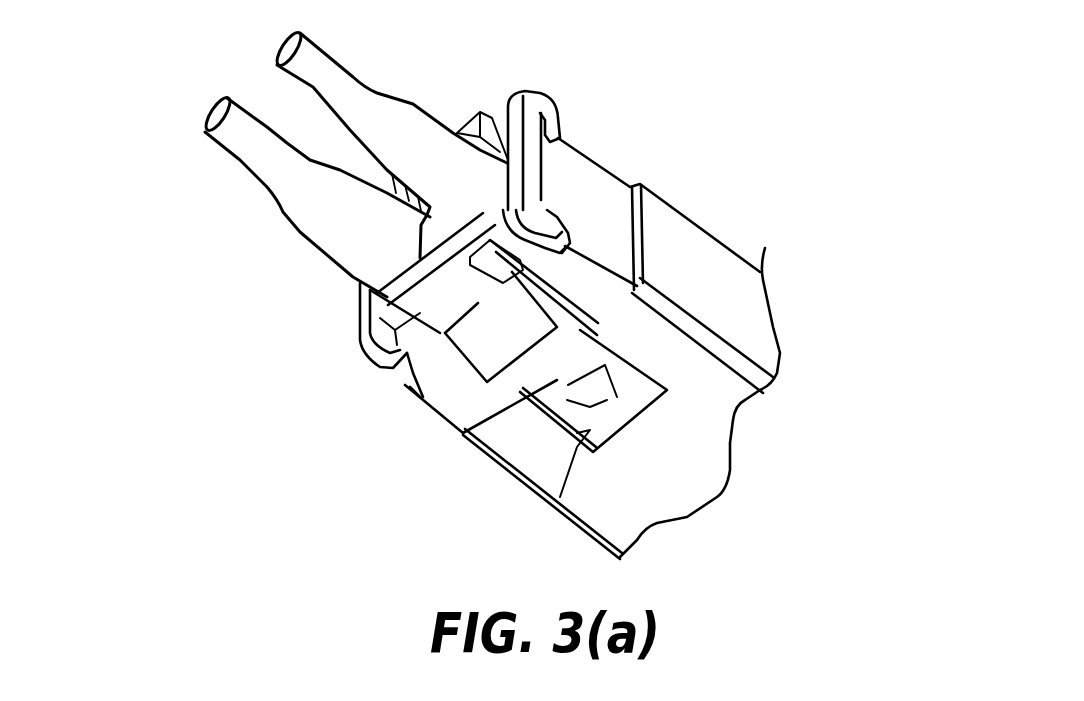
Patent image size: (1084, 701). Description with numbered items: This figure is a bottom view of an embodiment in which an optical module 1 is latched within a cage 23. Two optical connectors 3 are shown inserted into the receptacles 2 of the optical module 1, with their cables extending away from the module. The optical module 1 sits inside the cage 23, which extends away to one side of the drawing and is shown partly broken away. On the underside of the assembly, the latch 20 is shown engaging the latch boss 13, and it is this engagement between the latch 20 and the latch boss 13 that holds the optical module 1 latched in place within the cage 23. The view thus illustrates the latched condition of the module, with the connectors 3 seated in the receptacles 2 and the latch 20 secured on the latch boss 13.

The optical module 1 is at (626, 145).
The receptacles 2 is at (458, 95).
The optical connectors 3 is at (340, 190).
The latch boss 13 is at (490, 458).
The latch 20 is at (553, 508).
The cage 23 is at (725, 262).